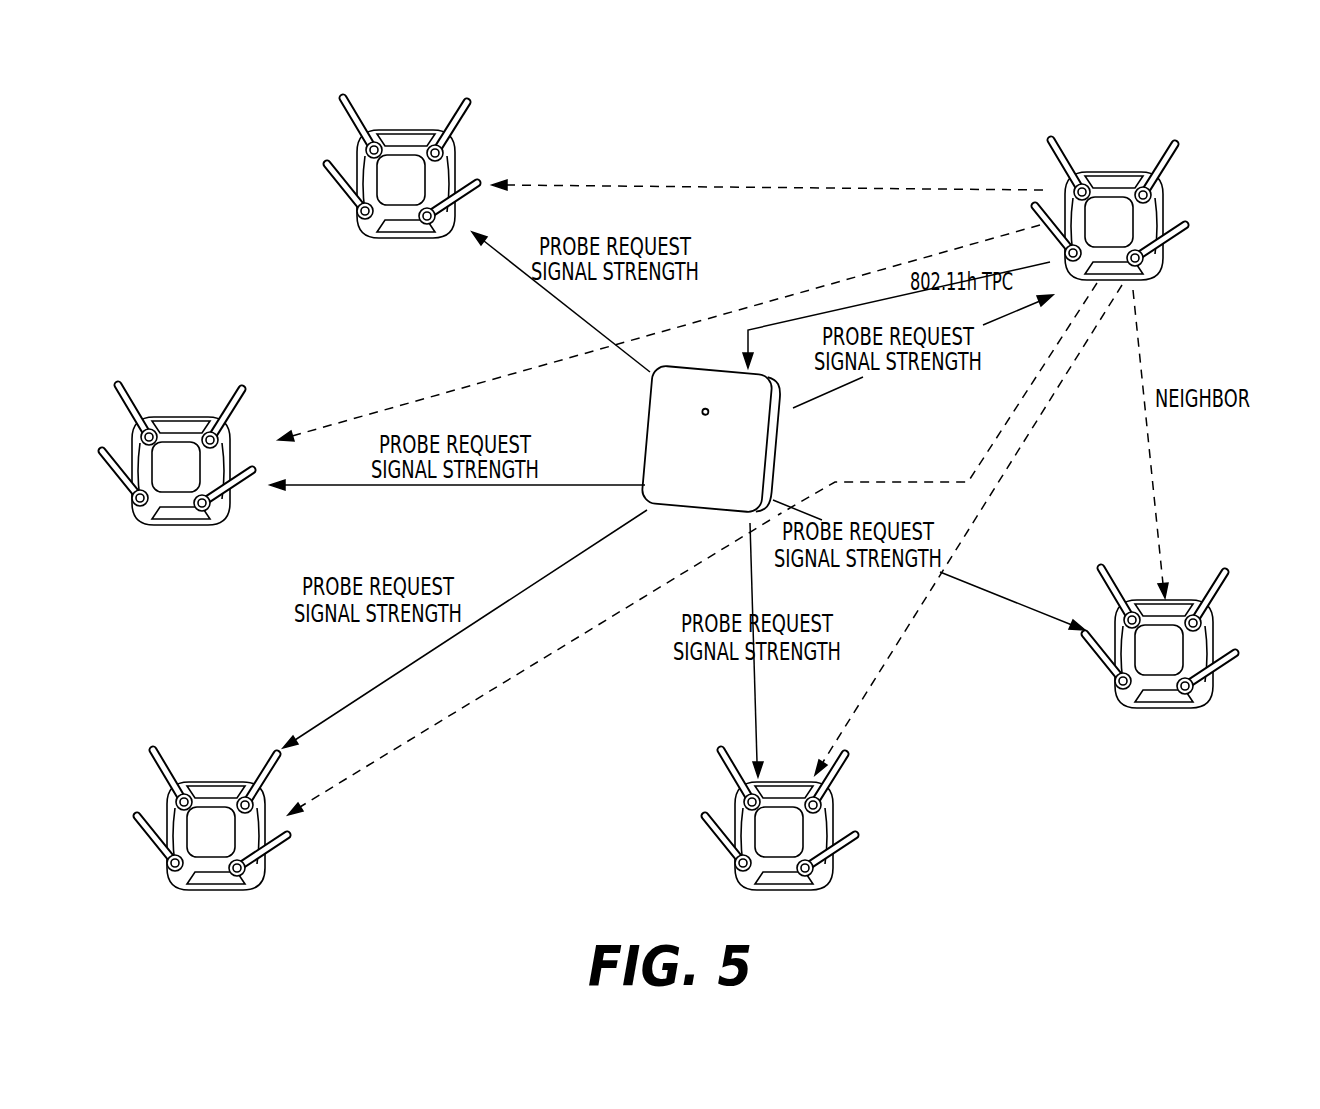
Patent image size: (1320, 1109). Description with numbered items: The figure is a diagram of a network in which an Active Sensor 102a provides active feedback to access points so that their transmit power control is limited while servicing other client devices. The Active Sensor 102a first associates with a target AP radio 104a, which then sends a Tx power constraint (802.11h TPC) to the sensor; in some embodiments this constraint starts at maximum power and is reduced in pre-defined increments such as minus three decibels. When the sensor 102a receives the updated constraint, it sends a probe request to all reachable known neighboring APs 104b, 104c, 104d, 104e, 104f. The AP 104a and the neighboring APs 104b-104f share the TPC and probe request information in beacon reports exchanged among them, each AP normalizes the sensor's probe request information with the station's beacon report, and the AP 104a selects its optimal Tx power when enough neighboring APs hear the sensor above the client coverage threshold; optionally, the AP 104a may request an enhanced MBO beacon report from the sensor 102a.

The active sensor 102a is at (786, 450).
The target AP radio 104a is at (1163, 215).
The neighboring access point 104b is at (458, 175).
The neighboring access point 104c is at (238, 406).
The neighboring access point 104d is at (264, 787).
The neighboring access point 104e is at (833, 820).
The neighboring access point 104f is at (1213, 636).